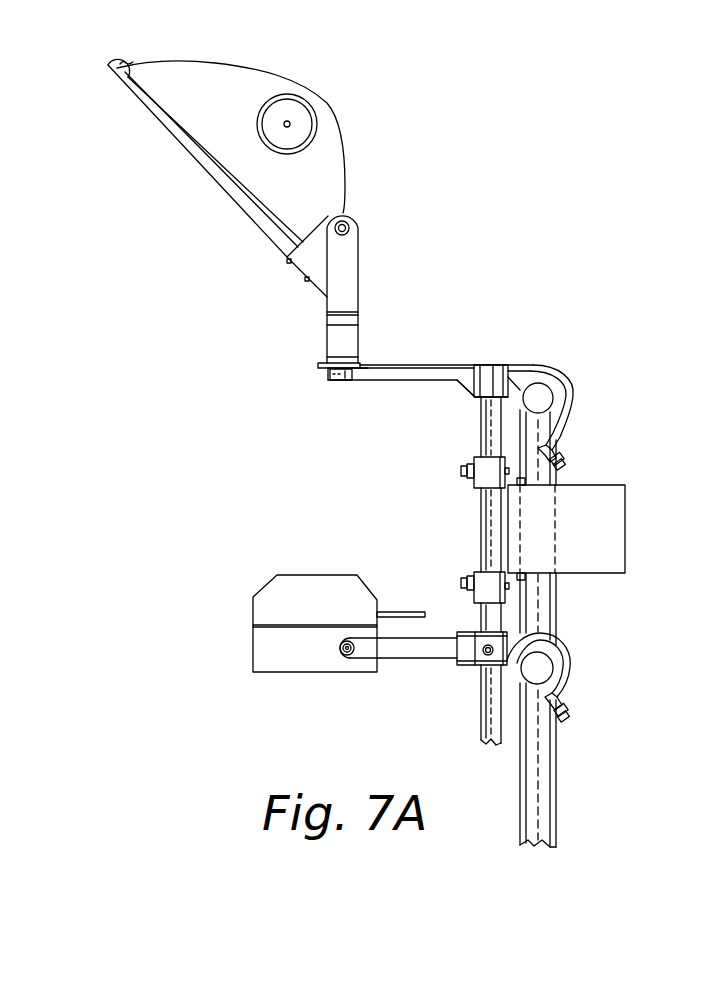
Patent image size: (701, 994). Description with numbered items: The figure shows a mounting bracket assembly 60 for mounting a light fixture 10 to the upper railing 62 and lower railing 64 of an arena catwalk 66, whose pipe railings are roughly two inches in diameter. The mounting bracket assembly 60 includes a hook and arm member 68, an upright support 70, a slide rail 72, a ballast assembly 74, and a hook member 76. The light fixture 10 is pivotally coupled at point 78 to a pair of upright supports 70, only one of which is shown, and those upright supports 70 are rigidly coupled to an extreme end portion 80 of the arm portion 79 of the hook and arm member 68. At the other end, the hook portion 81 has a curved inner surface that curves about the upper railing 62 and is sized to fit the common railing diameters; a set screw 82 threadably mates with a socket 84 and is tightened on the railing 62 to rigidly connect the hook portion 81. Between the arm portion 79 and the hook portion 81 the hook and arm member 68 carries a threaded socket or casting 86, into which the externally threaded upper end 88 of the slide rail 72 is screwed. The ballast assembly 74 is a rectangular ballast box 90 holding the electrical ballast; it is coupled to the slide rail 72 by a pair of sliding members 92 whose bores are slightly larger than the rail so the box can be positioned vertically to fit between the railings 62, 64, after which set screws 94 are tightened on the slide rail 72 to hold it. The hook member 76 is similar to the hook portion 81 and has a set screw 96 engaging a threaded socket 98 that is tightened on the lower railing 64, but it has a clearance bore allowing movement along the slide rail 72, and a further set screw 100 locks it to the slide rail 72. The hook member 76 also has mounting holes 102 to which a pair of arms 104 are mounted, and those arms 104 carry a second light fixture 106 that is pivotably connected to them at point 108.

The light fixture 10 is at (226, 137).
The mounting bracket assembly 60 is at (616, 350).
The upper railing 62 is at (533, 393).
The railing 64 is at (540, 633).
The catwalk 66 is at (562, 772).
The hook and arm member 68 is at (460, 358).
The upright support 70 is at (347, 248).
The slide rail 72 is at (481, 422).
The ballast assembly 74 is at (664, 504).
The hook member 76 is at (565, 663).
The pivot point 78 is at (345, 226).
The arm portion 79 is at (368, 368).
The extreme end portion 80 is at (330, 373).
The hook portion 81 is at (567, 390).
The set screw 82 is at (567, 463).
The socket 84 is at (561, 437).
The threaded socket or casting 86 is at (487, 375).
The upper end 88 is at (478, 403).
The ballast box 90 is at (620, 552).
The sliding members 92 is at (477, 568).
The set screws 94 is at (461, 471).
The set screw 96 is at (565, 728).
The threaded socket 98 is at (559, 697).
The set screw 100 is at (485, 657).
The mounting holes 102 is at (457, 655).
The arms 104 is at (367, 653).
The second light fixture 106 is at (257, 643).
The pivot point 108 is at (343, 642).